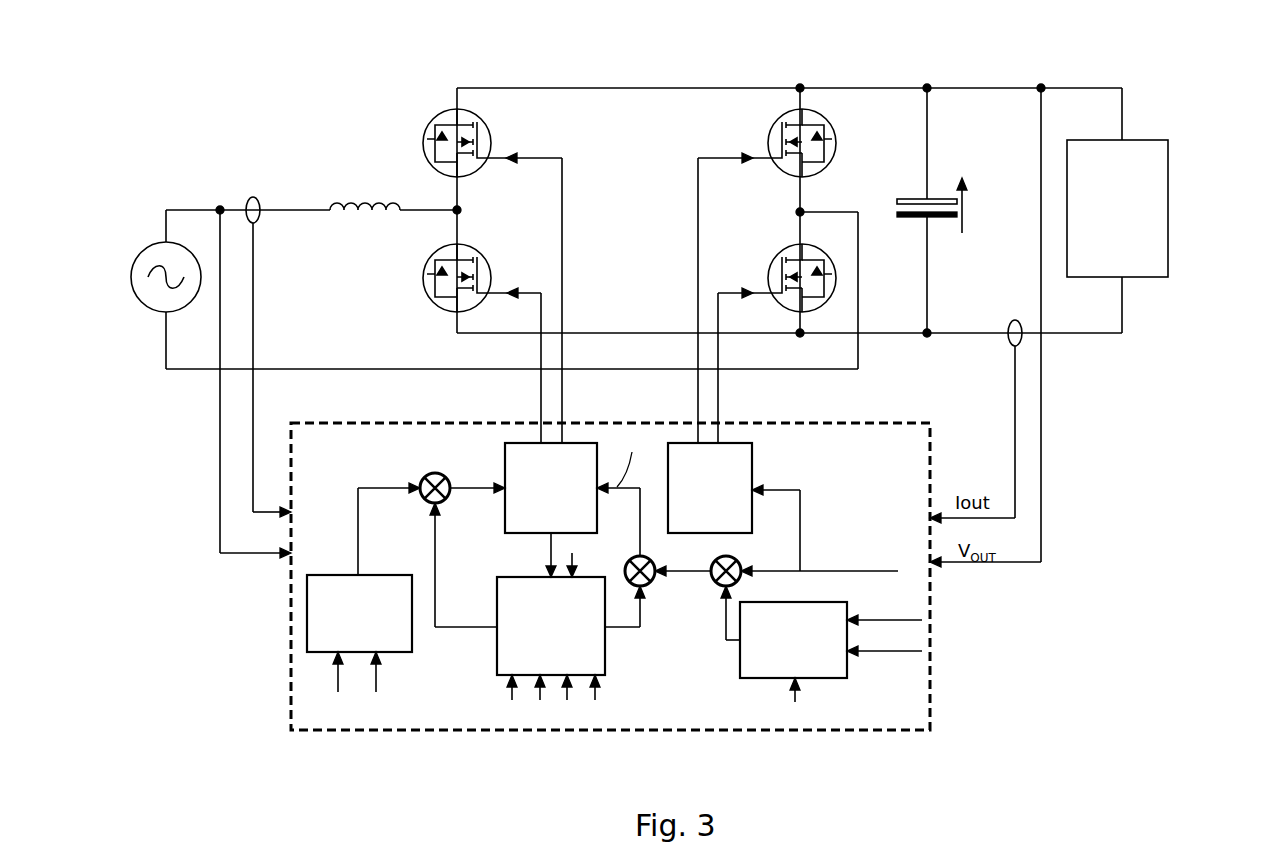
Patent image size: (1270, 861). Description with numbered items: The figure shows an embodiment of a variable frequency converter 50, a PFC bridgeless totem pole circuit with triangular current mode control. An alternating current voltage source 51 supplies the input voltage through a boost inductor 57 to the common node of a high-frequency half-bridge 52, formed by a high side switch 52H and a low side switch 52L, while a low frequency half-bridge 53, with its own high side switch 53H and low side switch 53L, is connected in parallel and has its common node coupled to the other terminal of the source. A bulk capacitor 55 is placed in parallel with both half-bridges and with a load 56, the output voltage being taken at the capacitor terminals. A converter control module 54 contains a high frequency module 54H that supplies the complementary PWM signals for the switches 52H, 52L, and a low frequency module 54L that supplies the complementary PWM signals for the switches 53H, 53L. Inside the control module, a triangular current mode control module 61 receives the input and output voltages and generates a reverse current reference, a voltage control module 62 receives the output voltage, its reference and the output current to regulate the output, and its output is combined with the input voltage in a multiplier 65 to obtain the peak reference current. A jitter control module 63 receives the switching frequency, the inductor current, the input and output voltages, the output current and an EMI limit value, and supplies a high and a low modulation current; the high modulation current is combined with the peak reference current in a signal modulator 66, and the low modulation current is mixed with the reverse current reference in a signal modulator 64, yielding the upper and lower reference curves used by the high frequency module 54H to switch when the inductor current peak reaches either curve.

The variable frequency converter 50 is at (118, 151).
The alternating current voltage source 51 is at (137, 268).
The high-frequency half-bridge 52 is at (513, 62).
The high side switch 52H is at (506, 276).
The low side switch 52L is at (483, 250).
The low frequency half-bridge 53 is at (800, 62).
The high side switch 53H is at (838, 162).
The low side switch 53L is at (827, 308).
The converter control module 54 is at (360, 733).
The high frequency module 54H is at (505, 455).
The low frequency module 54L is at (755, 478).
The bulk capacitor 55 is at (944, 210).
The load 56 is at (1152, 242).
The boost inductor 57 is at (348, 214).
The TCM module control 61 is at (327, 643).
The voltage control module 62 is at (827, 682).
The module for the control of the jitter of the switching frequency 63 is at (497, 676).
The signal modulator 64 is at (431, 563).
The multiplier 65 is at (804, 562).
The signal modulator 66 is at (657, 528).